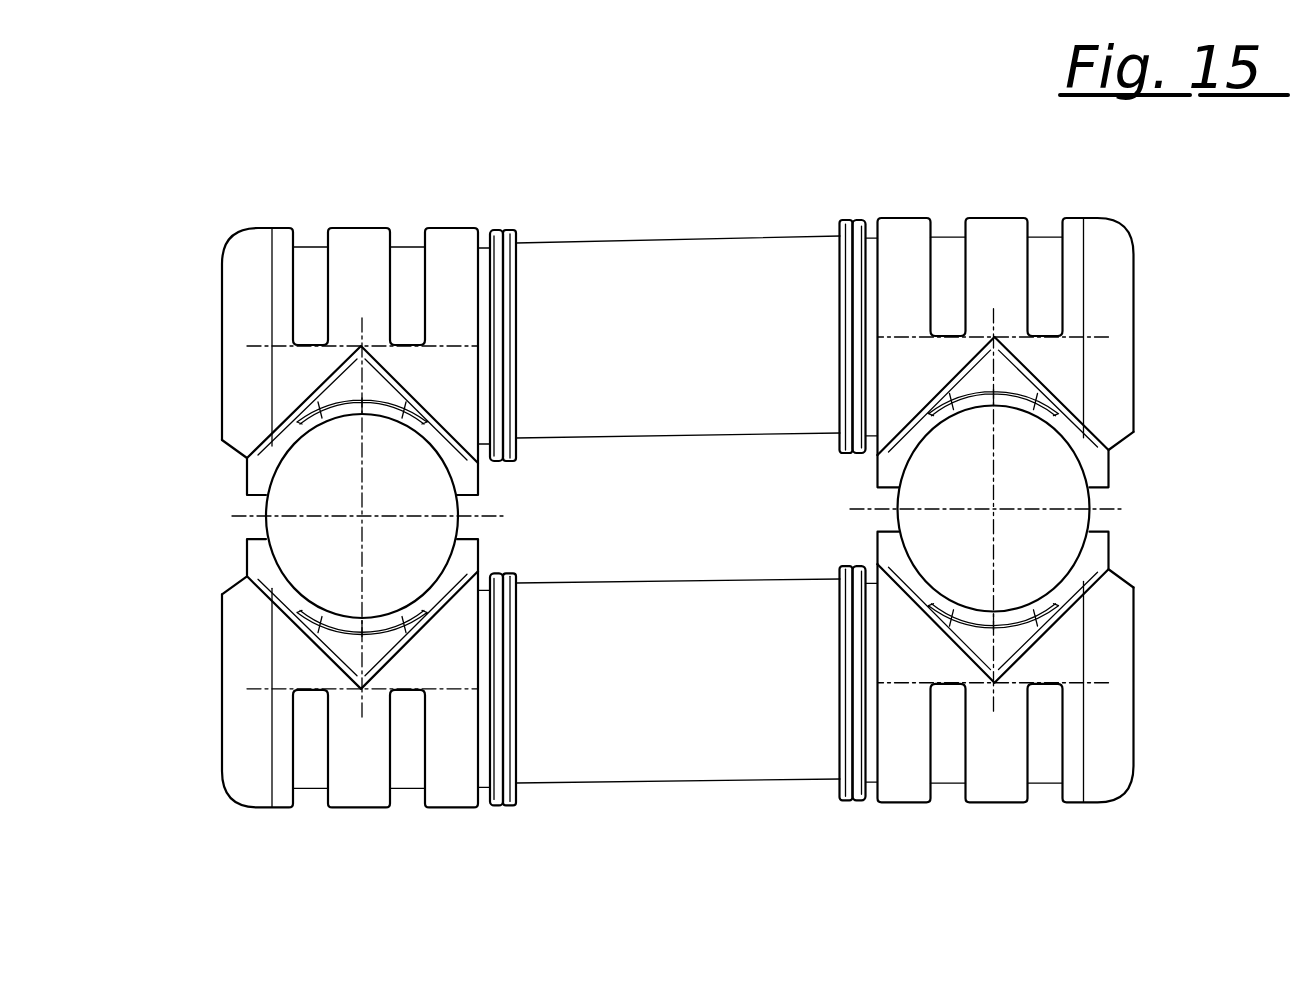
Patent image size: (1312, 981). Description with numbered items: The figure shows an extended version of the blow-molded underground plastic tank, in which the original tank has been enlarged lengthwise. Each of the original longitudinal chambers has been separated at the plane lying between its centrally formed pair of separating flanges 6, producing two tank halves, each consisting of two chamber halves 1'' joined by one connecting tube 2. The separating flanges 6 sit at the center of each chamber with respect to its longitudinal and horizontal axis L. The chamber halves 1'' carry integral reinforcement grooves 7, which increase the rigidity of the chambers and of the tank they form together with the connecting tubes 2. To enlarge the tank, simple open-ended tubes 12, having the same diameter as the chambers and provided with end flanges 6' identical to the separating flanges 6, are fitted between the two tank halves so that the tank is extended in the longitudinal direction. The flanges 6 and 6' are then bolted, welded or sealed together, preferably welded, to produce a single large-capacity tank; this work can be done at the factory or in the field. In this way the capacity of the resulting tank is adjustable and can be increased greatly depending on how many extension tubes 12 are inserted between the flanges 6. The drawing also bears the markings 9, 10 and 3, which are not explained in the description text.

The chamber half 1'' is at (678, 514).
The connecting tube 2 is at (243, 498).
The bearing insert 3 is at (292, 580).
The separating flange 6 is at (630, 550).
The end flange 6' is at (678, 512).
The reinforcement groove 7 is at (1043, 303).
The left housing assembly 9 is at (268, 205).
The right housing assembly 10 is at (1072, 200).
The open-ended tube 12 is at (640, 250).
The longitudinal and horizontal axis L is at (1103, 340).